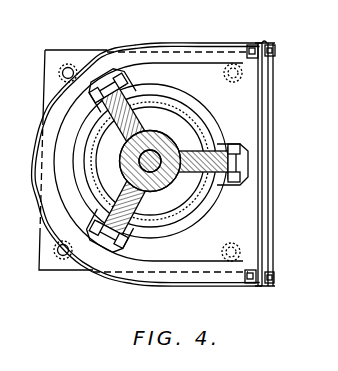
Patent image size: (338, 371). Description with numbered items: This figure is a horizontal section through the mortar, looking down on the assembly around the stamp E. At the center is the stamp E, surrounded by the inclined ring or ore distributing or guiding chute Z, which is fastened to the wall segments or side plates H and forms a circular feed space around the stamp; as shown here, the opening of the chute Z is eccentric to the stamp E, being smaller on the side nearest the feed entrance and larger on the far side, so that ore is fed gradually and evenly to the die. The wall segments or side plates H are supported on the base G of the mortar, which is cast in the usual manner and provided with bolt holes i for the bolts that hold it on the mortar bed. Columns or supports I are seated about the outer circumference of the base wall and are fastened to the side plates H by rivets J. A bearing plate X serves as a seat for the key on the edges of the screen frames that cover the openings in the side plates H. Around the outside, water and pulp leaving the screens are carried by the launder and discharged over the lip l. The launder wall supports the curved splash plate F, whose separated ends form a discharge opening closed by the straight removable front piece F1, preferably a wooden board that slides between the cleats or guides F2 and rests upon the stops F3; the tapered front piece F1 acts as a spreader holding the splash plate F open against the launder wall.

The curved splash plate F is at (144, 43).
The removable front piece F1 is at (264, 88).
The cleats or guides F2 is at (268, 41).
The stops F3 is at (278, 56).
The base G is at (70, 267).
The bolt holes i is at (62, 75).
The lip l is at (275, 204).
The wall segments or side plates H is at (204, 113).
The ore distributing or guiding chute Z is at (180, 104).
The rivets J is at (152, 92).
The columns or supports I is at (102, 82).
The bearing plate X is at (128, 86).
The stamp E is at (153, 193).